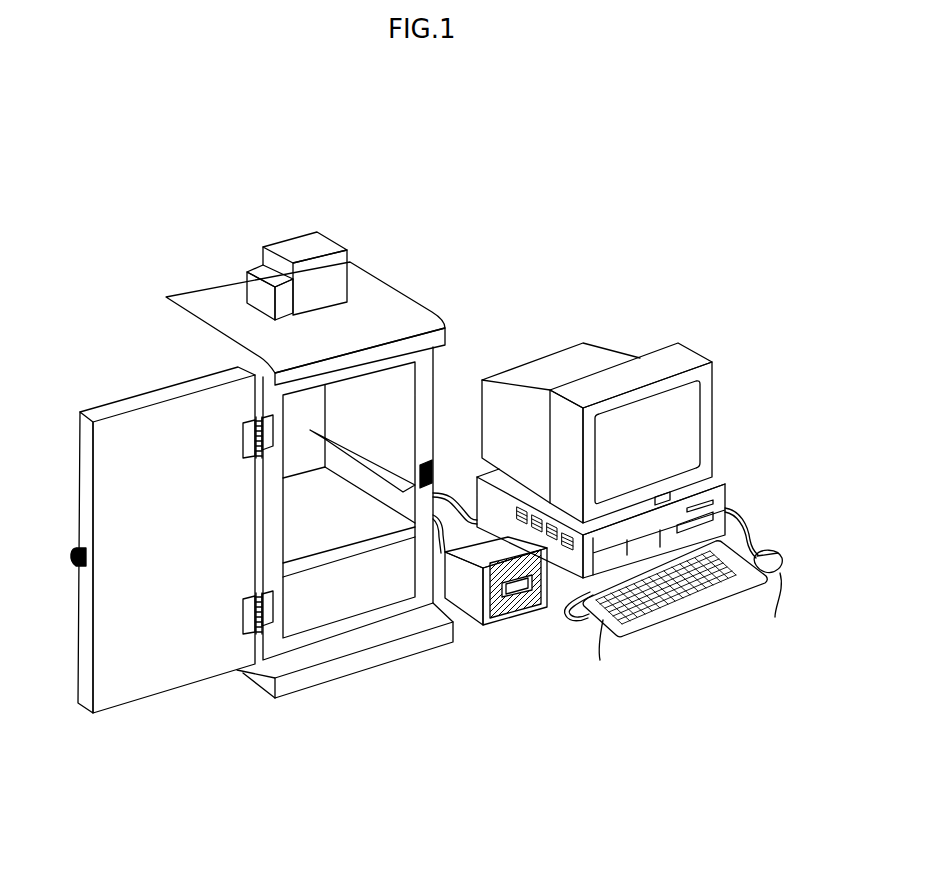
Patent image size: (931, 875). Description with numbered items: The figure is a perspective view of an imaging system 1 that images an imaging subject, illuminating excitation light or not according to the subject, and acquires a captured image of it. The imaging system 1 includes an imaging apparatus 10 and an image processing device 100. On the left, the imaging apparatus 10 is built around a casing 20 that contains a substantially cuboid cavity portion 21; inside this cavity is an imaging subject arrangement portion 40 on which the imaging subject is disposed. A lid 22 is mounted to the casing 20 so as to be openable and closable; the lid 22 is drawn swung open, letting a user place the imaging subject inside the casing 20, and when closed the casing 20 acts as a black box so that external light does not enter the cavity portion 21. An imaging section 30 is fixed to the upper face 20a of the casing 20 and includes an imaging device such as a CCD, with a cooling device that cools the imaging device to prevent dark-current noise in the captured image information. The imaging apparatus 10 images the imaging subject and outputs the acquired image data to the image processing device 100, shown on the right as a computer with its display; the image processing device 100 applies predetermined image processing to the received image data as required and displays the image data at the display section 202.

The imaging system 1 is at (533, 148).
The imaging apparatus 10 is at (290, 215).
The casing 20 is at (196, 297).
The upper face 20a is at (395, 303).
The cavity portion 21 is at (392, 380).
The lid 22 is at (168, 684).
The imaging section 30 is at (348, 251).
The imaging subject arrangement portion 40 is at (360, 550).
The image processing device 100 is at (660, 287).
The display section 202 is at (712, 403).